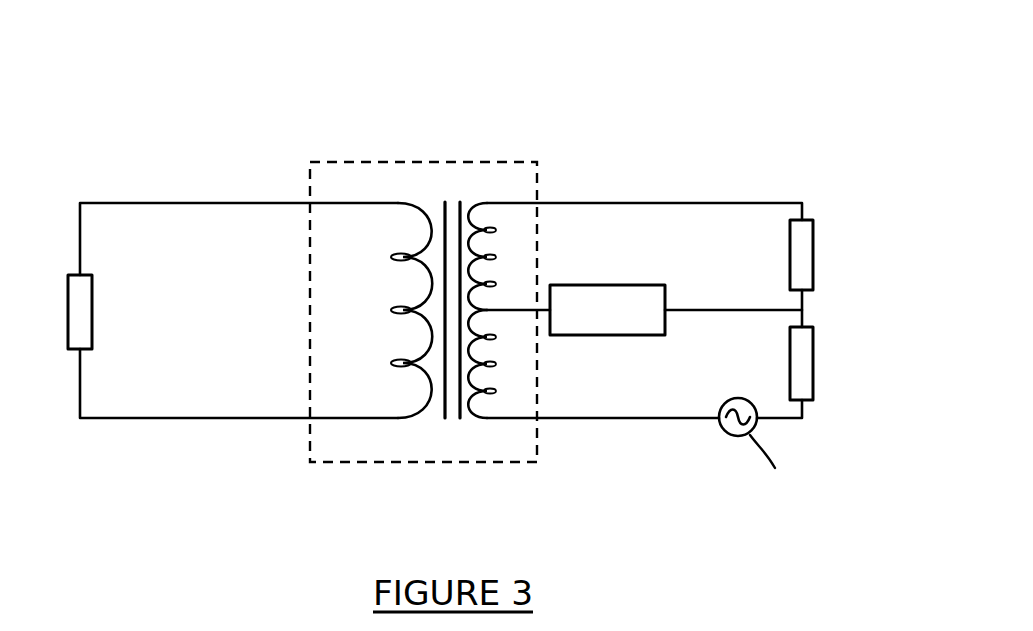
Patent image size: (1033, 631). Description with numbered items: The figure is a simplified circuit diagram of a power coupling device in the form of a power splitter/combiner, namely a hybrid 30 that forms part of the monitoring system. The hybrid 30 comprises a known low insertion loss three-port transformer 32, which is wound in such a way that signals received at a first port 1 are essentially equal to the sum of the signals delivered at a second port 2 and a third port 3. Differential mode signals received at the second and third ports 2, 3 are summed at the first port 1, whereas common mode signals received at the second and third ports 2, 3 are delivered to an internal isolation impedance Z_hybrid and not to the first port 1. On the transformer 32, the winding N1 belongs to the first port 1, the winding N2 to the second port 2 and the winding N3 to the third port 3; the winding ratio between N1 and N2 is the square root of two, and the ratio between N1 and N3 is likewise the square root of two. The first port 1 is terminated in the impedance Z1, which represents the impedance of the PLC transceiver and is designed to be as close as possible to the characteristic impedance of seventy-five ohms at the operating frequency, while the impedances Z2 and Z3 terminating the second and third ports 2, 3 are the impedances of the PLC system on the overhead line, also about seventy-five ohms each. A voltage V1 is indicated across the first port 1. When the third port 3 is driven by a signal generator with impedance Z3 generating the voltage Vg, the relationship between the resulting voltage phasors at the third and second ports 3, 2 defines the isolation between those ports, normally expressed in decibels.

The hybrid 30 is at (460, 258).
The three-port transformer 32 is at (423, 272).
The first port 1 is at (239, 297).
The second port 2 is at (644, 197).
The third port 3 is at (644, 422).
The impedance of the PLC transceiver Z1 is at (60, 312).
The impedance of the PLC system on the OHTL Z2 is at (823, 255).
The impedance of the PLC system on the OHTL Z3 is at (823, 363).
The voltage V1 is at (191, 312).
The first port winding N1 is at (391, 310).
The second port winding N2 is at (498, 256).
The third port winding N3 is at (498, 364).